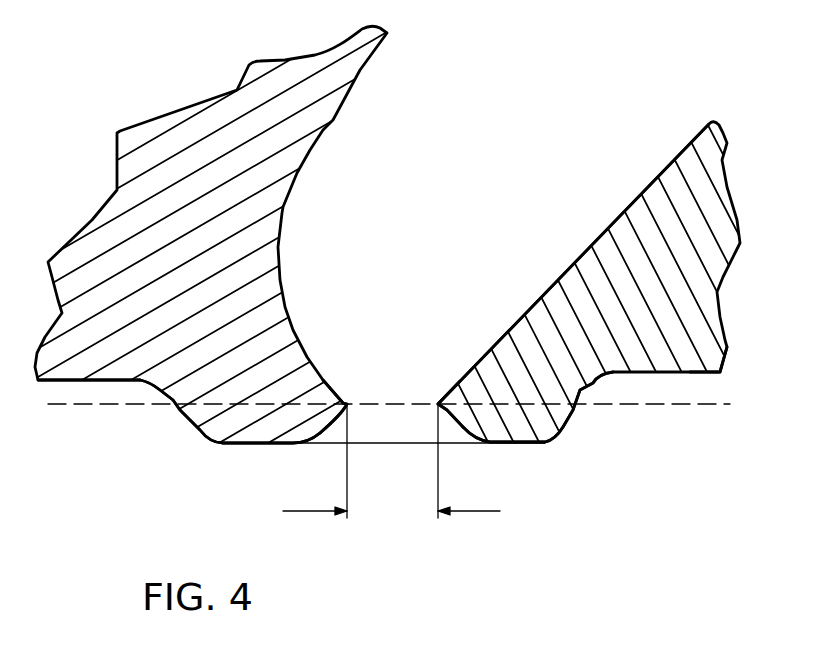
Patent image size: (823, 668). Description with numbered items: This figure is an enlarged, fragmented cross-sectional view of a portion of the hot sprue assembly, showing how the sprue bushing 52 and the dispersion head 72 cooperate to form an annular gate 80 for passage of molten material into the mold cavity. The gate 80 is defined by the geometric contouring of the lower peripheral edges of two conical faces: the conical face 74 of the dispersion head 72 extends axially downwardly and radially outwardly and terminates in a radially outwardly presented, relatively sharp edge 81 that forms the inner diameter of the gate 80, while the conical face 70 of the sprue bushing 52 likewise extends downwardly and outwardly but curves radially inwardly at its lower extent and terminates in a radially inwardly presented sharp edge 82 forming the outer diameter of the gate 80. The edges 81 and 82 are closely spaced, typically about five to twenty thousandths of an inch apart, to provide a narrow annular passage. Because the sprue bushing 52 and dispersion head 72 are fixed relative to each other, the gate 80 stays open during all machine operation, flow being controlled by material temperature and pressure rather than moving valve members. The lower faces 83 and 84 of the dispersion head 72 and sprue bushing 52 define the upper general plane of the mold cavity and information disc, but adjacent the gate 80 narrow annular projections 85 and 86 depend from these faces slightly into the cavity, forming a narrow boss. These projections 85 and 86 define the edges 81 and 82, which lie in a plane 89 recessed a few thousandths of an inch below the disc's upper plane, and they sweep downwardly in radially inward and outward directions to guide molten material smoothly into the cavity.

The sprue bushing 52 is at (210, 299).
The conical face 70 is at (324, 130).
The dispersion head 72 is at (568, 274).
The conical face 74 is at (587, 247).
The gate 80 is at (386, 392).
The sharp edge 81 is at (438, 403).
The sharp edge 82 is at (348, 403).
The lower face 83 is at (692, 373).
The lower face 84 is at (75, 383).
The annular projection 85 is at (520, 428).
The annular projection 86 is at (253, 435).
The plane 89 is at (670, 404).